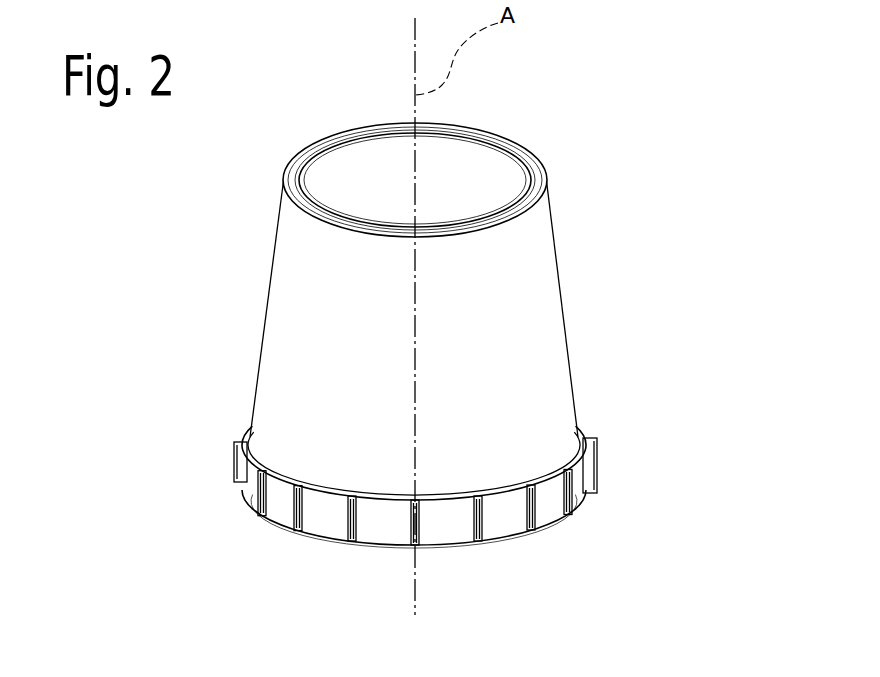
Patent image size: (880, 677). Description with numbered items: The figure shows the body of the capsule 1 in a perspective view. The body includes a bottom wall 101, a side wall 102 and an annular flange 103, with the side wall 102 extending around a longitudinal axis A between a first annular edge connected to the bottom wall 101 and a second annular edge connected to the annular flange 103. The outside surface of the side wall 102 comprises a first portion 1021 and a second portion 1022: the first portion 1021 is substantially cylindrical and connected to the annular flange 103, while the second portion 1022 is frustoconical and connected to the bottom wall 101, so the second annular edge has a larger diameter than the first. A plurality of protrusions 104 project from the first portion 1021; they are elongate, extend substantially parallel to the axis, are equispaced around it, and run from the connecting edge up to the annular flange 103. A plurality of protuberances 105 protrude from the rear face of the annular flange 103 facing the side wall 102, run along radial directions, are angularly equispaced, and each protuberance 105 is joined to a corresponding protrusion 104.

The capsule 1 is at (660, 242).
The bottom wall 101 is at (492, 177).
The side wall 102 is at (312, 389).
The first portion 1021 is at (325, 513).
The second portion 1022 is at (330, 303).
The annular flange 103 is at (512, 533).
The protrusions 104 is at (417, 503).
The protuberances 105 is at (548, 527).